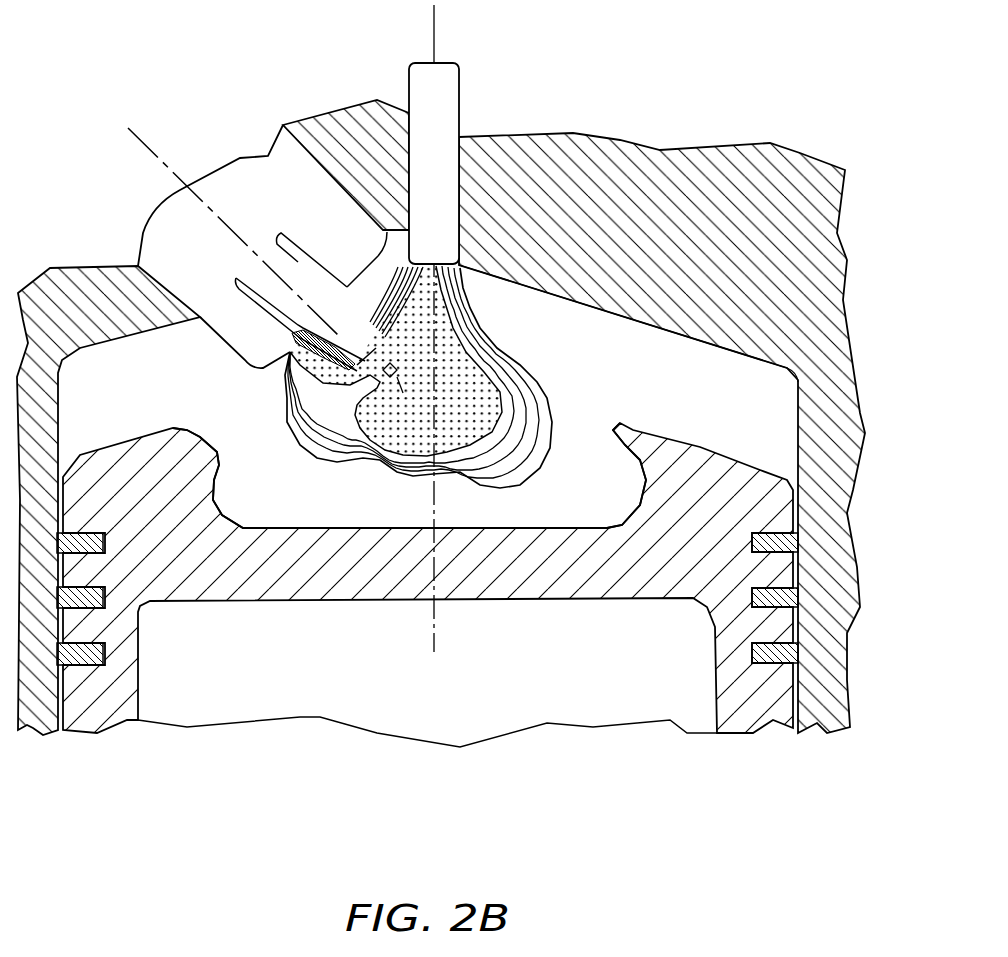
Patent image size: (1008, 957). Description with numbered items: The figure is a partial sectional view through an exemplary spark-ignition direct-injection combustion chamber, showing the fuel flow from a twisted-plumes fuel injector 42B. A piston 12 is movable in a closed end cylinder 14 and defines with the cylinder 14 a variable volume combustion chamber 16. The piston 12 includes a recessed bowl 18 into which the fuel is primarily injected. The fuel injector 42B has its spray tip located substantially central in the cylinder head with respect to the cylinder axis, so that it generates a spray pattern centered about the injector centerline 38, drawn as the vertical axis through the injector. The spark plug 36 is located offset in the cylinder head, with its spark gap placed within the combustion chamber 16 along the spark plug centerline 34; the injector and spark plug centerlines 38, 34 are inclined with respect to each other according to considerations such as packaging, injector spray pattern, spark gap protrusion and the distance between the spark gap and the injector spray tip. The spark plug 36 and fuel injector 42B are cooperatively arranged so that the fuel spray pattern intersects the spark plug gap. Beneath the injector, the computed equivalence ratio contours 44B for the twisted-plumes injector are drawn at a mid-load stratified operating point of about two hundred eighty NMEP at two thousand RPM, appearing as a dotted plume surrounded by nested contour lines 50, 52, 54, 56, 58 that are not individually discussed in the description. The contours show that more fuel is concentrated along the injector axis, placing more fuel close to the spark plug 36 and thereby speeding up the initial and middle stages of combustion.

The piston 12 is at (158, 593).
The closed end cylinder 14 is at (800, 452).
The variable volume combustion chamber 16 is at (740, 383).
The recessed bowl 18 is at (560, 523).
The spark plug centerline 34 is at (160, 155).
The spark plug 36 is at (163, 242).
The injector centerline 38 is at (437, 50).
The fuel injector 42B is at (447, 118).
The equivalence ratio contours 44B is at (500, 352).
The mixture region 50 is at (502, 362).
The mixture region 52 is at (528, 378).
The mixture region 54 is at (540, 390).
The mixture region 56 is at (545, 399).
The mixture region 58 is at (550, 408).